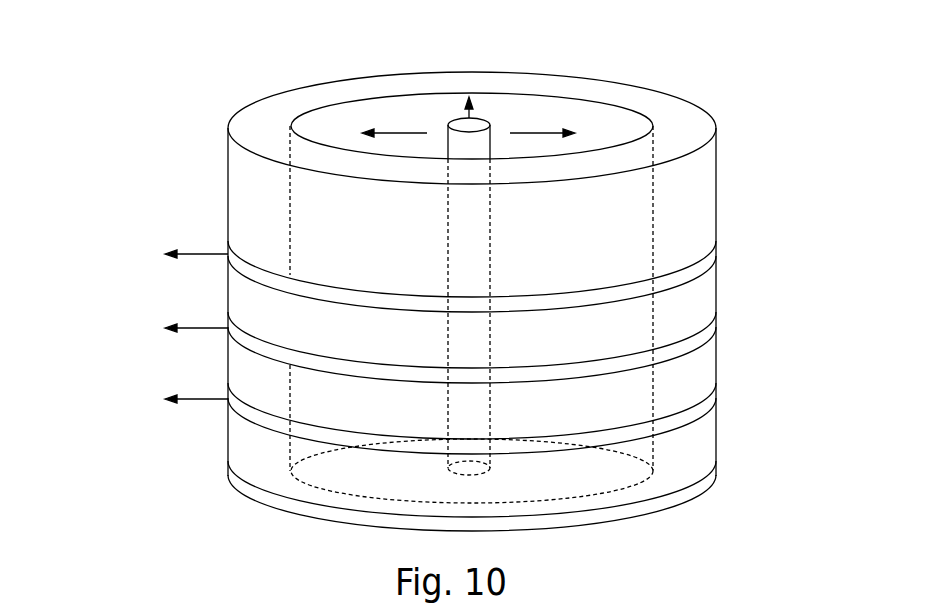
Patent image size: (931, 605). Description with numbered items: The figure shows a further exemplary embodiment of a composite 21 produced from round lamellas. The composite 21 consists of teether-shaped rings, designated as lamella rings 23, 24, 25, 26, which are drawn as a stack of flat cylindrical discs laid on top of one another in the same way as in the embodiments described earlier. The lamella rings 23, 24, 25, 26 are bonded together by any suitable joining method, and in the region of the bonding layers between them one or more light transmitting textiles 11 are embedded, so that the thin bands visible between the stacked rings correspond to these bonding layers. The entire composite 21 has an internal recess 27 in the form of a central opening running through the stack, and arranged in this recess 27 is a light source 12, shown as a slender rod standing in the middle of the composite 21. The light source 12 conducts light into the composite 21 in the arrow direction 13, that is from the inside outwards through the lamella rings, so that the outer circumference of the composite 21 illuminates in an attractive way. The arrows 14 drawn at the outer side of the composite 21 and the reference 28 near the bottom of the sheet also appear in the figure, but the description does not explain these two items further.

The composite 21 is at (256, 73).
The light transmitting textile 11 is at (248, 270).
The light source 12 is at (476, 125).
The arrow direction 13 is at (400, 132).
The outlet flow 14 is at (205, 252).
The lamella ring 23 is at (680, 223).
The lamella ring 24 is at (692, 307).
The lamella ring 25 is at (692, 373).
The lamella ring 26 is at (692, 457).
The internal recess 27 is at (592, 125).
The base 28 is at (238, 589).